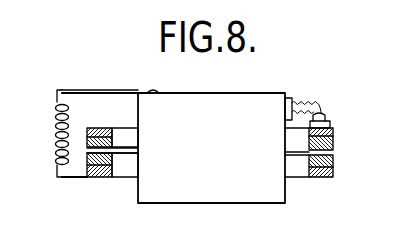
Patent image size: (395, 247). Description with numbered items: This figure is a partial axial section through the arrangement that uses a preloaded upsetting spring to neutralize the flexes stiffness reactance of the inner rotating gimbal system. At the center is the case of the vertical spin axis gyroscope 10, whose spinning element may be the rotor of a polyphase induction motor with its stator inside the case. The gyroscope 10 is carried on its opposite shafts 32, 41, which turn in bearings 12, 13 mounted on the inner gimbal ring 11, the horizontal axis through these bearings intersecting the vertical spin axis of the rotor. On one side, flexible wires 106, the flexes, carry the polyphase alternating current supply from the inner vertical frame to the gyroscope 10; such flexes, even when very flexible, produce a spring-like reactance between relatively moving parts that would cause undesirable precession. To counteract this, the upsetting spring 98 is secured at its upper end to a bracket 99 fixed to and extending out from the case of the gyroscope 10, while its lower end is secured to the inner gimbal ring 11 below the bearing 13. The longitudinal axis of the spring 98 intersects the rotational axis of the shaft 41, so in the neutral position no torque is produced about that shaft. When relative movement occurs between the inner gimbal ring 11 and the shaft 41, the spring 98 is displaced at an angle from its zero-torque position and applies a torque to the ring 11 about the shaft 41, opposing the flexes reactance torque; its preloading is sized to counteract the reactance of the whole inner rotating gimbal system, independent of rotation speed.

The gyroscope 10 is at (207, 193).
The bracket 99 is at (110, 89).
The upsetting spring 98 is at (55, 122).
The inner gimbal ring 11 is at (99, 128).
The bearing 13 is at (113, 139).
The shaft 41 is at (122, 154).
The bearing 12 is at (333, 142).
The shaft 32 is at (298, 153).
The wires 106 is at (325, 113).